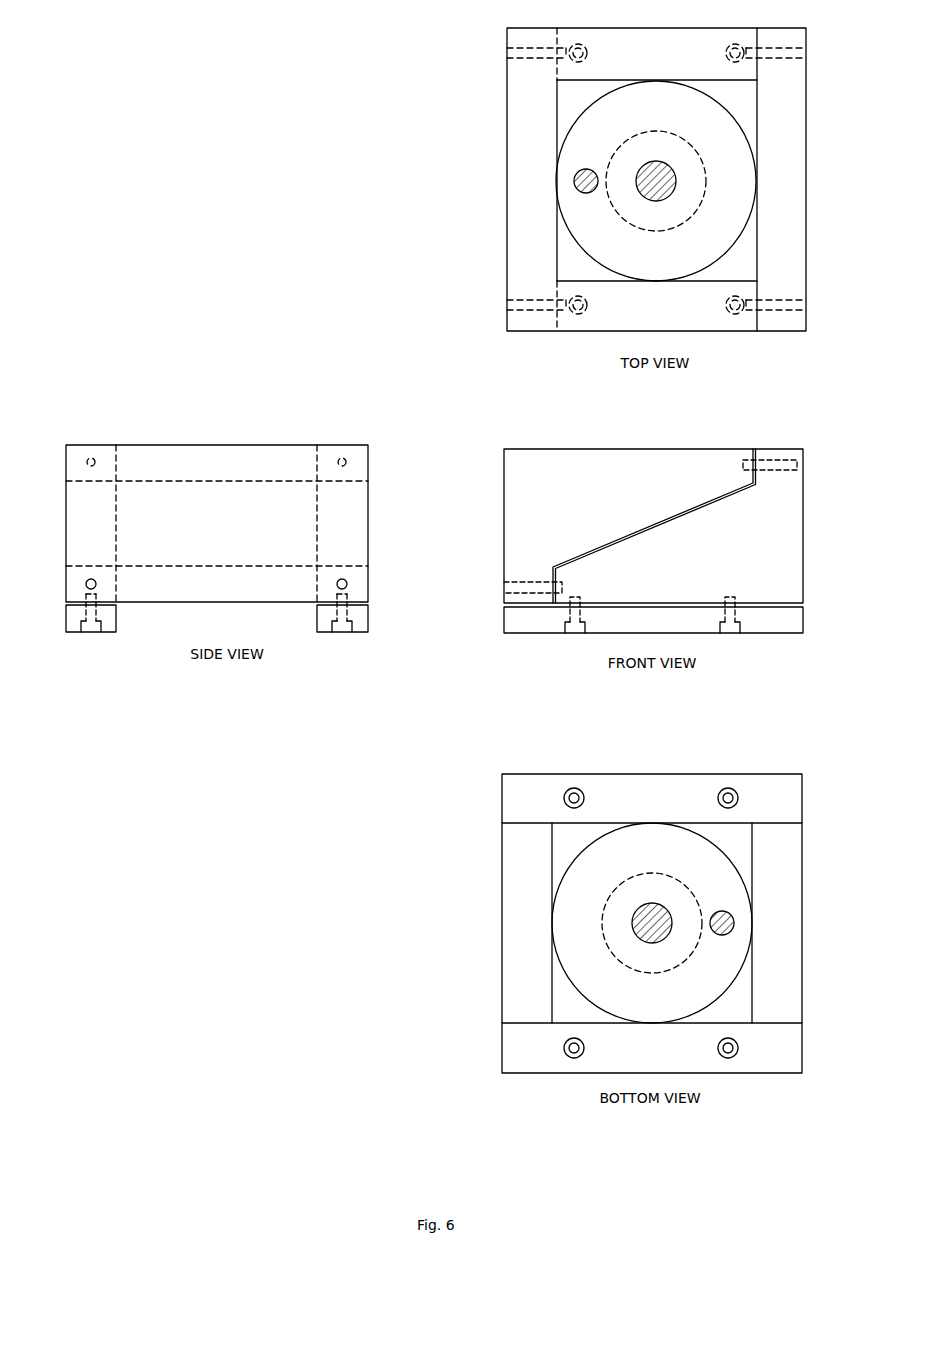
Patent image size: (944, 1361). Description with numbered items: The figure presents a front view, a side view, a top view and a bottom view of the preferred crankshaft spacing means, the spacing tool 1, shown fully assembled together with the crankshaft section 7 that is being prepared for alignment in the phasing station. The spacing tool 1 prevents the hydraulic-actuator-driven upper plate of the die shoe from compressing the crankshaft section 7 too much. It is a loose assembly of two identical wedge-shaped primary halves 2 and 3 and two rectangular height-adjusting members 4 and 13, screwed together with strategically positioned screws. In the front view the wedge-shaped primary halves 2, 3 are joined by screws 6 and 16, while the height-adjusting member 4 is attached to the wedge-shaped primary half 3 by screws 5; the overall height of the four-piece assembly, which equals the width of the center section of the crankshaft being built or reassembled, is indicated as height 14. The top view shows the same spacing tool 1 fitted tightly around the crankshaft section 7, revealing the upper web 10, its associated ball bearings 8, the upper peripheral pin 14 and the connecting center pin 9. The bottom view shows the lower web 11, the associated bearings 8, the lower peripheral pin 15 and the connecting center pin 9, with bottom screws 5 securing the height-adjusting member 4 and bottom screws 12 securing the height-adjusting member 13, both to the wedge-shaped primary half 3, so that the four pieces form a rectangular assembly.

The spacing tool 1 is at (507, 75).
The wedge-shaped primary half 2 is at (528, 251).
The wedge-shaped primary half 3 is at (779, 219).
The height-adjusting member 4 is at (368, 620).
The screws 5 is at (575, 624).
The screw 6 is at (515, 585).
The crankshaft section 7 is at (757, 175).
The ball bearings 8 is at (607, 151).
The connecting center pin 9 is at (672, 193).
The upper web 10 is at (740, 113).
The lower web 11 is at (735, 862).
The bottom screws 12 is at (574, 1062).
The height-adjusting member 13 is at (66, 620).
The upper peripheral pin / height 14 is at (571, 181).
The lower peripheral pin 15 is at (732, 933).
The screw 16 is at (790, 463).